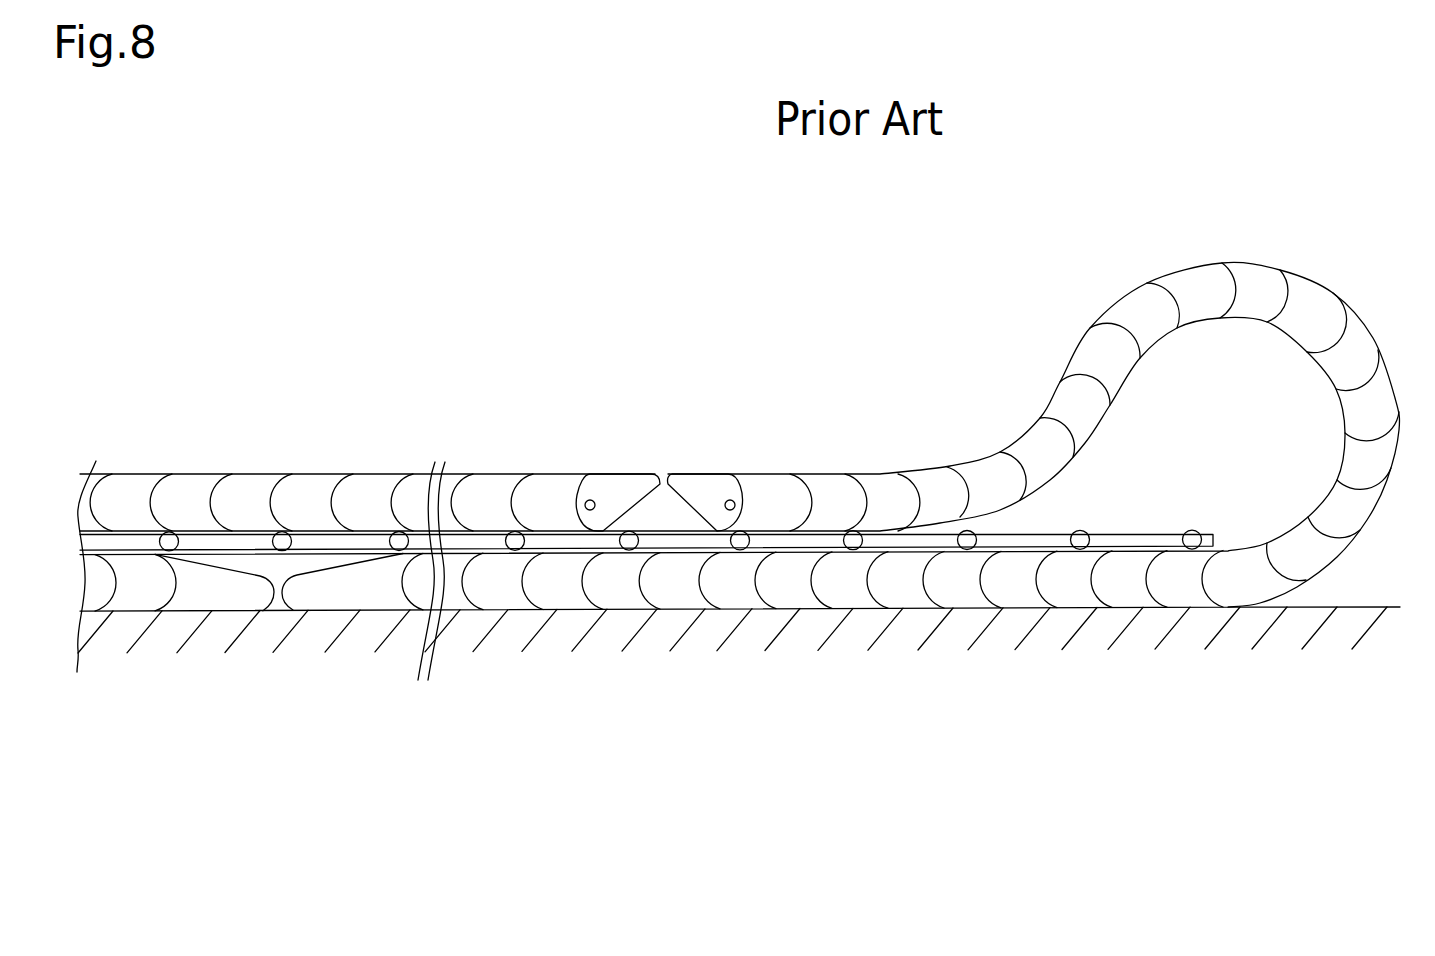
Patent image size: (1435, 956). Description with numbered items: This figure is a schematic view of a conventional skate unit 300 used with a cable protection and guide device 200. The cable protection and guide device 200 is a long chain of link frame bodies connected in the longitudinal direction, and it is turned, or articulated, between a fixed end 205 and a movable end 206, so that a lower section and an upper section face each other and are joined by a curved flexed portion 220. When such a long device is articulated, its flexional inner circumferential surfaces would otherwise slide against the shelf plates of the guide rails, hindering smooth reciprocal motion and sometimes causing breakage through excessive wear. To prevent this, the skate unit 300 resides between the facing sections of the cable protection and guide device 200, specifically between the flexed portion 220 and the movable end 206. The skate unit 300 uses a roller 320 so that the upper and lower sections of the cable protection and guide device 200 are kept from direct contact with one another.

The cable protection and guide device 200 is at (1050, 620).
The fixed end 205 is at (305, 597).
The movable end 206 is at (633, 486).
The flexed portion 220 is at (1322, 288).
The skate unit 300 is at (611, 445).
The roller 320 is at (858, 530).